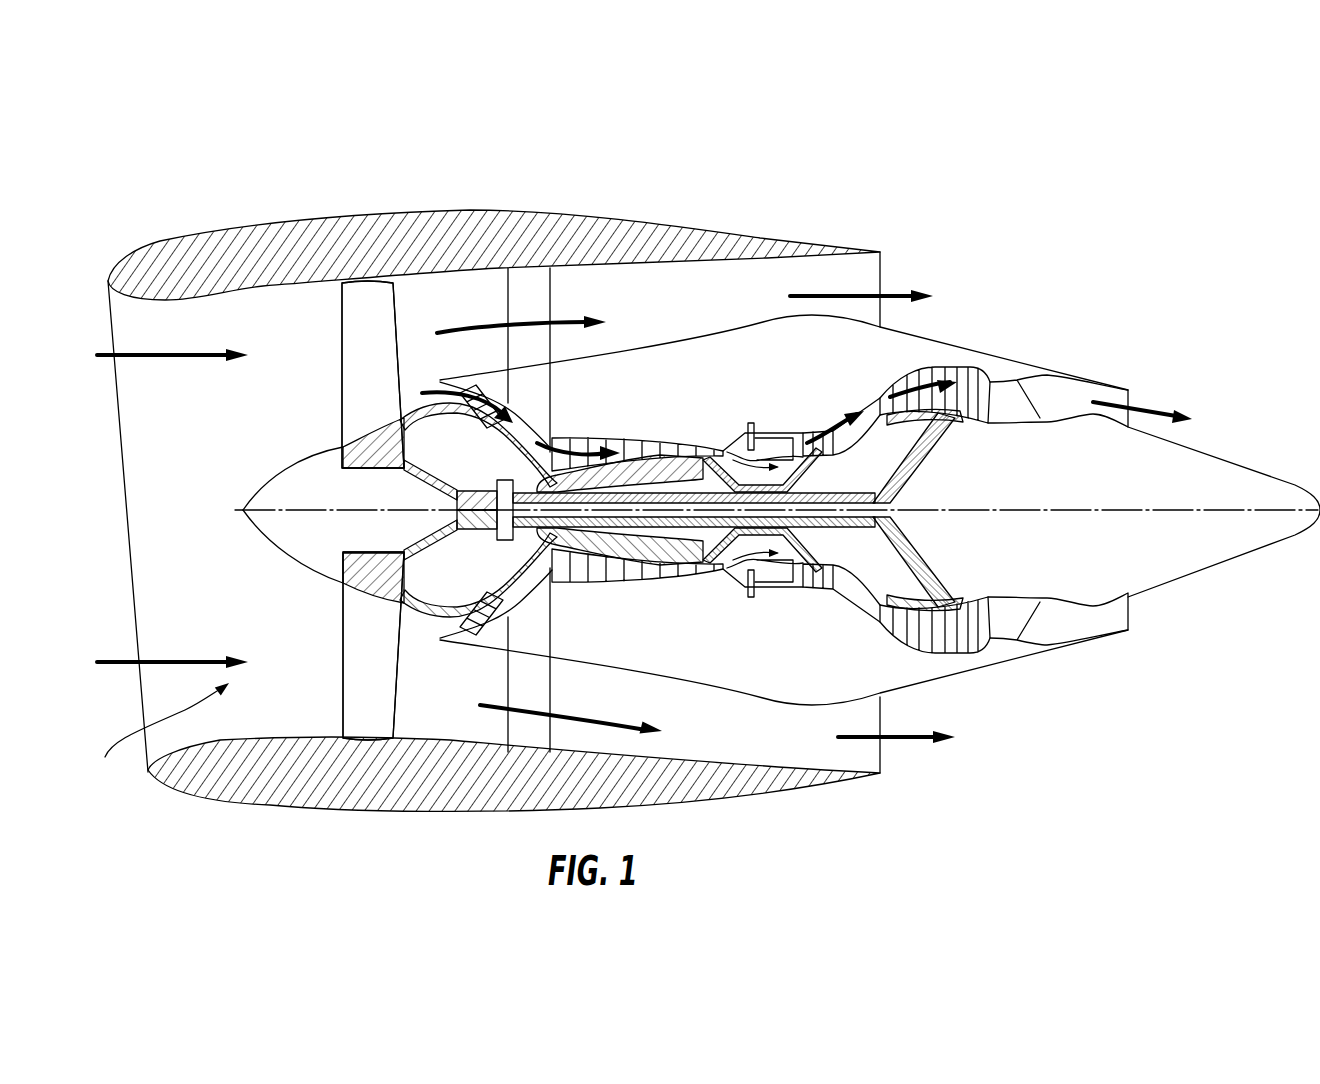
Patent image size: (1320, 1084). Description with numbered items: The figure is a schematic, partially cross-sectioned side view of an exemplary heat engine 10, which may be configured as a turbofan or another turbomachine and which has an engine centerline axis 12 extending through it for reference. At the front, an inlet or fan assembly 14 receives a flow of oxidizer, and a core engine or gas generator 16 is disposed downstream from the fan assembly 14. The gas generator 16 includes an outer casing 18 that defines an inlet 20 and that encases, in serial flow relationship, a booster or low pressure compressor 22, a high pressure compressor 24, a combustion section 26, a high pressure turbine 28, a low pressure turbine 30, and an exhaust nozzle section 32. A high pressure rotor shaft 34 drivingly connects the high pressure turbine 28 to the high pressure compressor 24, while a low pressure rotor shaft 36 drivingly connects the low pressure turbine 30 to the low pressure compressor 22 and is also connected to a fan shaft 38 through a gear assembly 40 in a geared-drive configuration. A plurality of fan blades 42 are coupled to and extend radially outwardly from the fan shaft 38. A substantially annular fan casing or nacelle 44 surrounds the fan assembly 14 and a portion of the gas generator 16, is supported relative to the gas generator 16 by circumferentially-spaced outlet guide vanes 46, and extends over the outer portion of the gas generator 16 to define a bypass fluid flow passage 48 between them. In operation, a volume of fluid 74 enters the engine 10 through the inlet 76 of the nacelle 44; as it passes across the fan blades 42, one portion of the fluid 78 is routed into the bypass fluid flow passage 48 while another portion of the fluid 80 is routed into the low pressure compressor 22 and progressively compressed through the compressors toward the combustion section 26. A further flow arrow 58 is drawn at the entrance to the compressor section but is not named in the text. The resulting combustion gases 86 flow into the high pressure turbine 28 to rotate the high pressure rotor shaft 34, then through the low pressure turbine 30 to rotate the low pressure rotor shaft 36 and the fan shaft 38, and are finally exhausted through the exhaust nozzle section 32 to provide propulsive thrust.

The heat engine 10 is at (1033, 237).
The engine centerline axis 12 is at (1063, 507).
The fan assembly 14 is at (423, 300).
The gas generator 16 is at (763, 318).
The outer casing 18 is at (721, 692).
The inlet 20 is at (440, 630).
The low pressure compressor 22 is at (507, 594).
The high pressure compressor 24 is at (583, 577).
The combustion section 26 is at (773, 577).
The high pressure turbine 28 is at (830, 573).
The low pressure turbine 30 is at (972, 665).
The exhaust nozzle section 32 is at (1045, 636).
The high pressure rotor shaft 34 is at (812, 478).
The low pressure rotor shaft 36 is at (922, 460).
The fan shaft 38 is at (405, 466).
The gear assembly 40 is at (497, 475).
The fan blades 42 is at (360, 320).
The nacelle 44 is at (344, 222).
The outlet guide vanes 46 is at (535, 303).
The bypass fluid flow passage 48 is at (687, 320).
The core inlet airflow 58 is at (560, 437).
The fluid 74 is at (148, 352).
The inlet 76 is at (154, 738).
The bypass fluid 78 is at (495, 322).
The core fluid 80 is at (440, 380).
The combustion gases 86 is at (815, 428).